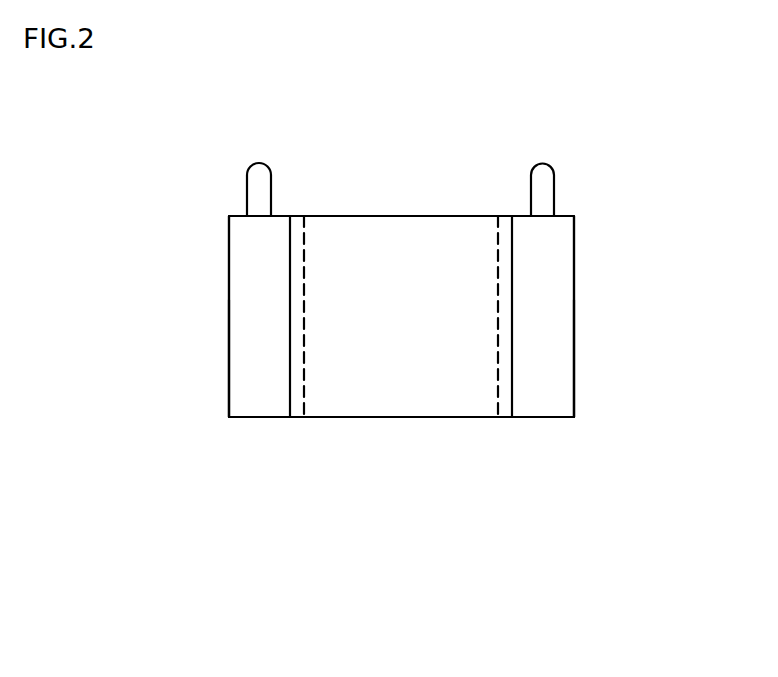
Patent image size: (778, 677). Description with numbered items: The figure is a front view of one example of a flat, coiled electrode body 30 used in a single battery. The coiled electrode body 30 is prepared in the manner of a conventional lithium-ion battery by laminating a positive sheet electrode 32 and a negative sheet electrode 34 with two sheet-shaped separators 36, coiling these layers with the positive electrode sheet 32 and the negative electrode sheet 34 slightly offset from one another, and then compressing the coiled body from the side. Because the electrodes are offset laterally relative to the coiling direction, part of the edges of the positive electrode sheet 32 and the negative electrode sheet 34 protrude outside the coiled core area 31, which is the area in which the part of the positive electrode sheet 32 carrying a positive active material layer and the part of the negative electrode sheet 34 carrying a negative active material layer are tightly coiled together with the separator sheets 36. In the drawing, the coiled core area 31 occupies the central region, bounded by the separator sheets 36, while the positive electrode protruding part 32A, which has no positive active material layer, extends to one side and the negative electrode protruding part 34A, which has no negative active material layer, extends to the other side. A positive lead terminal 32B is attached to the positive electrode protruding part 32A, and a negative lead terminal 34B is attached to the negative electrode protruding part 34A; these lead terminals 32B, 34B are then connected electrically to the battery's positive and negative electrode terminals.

The coiled electrode body 30 is at (475, 207).
The coiled core area 31 is at (400, 400).
The positive sheet electrode 32 is at (576, 277).
The positive electrode protruding part 32A is at (552, 375).
The positive lead terminal 32B is at (554, 180).
The negative sheet electrode 34 is at (229, 281).
The negative electrode protruding part 34A is at (238, 358).
The negative lead terminal 34B is at (271, 178).
The separator sheet 36 is at (338, 227).